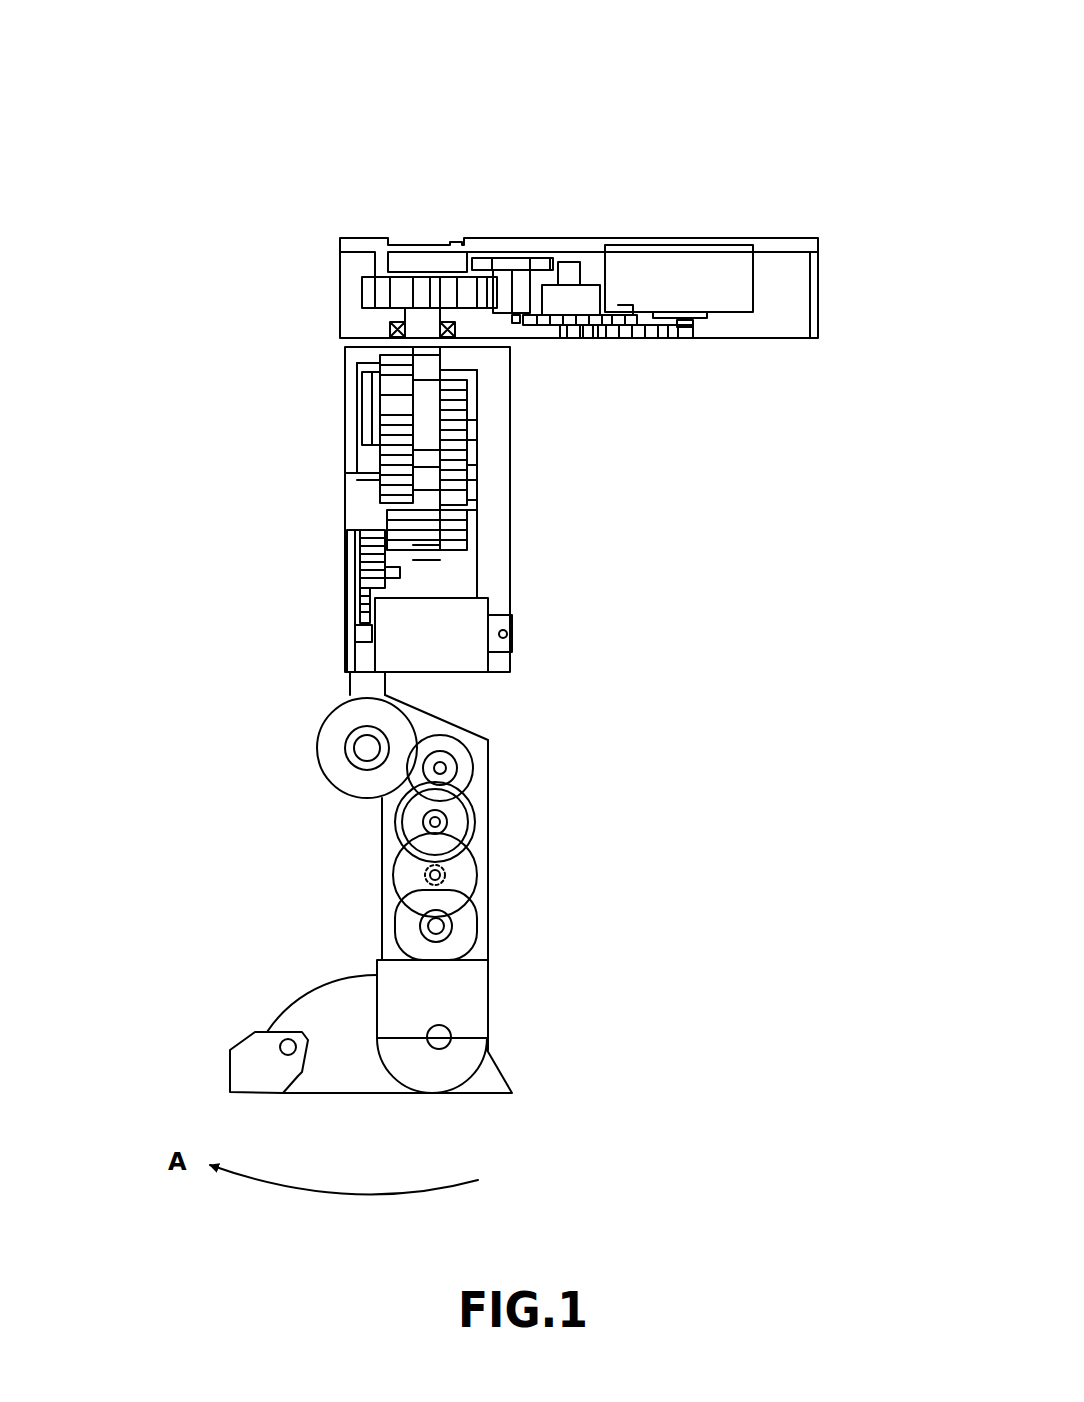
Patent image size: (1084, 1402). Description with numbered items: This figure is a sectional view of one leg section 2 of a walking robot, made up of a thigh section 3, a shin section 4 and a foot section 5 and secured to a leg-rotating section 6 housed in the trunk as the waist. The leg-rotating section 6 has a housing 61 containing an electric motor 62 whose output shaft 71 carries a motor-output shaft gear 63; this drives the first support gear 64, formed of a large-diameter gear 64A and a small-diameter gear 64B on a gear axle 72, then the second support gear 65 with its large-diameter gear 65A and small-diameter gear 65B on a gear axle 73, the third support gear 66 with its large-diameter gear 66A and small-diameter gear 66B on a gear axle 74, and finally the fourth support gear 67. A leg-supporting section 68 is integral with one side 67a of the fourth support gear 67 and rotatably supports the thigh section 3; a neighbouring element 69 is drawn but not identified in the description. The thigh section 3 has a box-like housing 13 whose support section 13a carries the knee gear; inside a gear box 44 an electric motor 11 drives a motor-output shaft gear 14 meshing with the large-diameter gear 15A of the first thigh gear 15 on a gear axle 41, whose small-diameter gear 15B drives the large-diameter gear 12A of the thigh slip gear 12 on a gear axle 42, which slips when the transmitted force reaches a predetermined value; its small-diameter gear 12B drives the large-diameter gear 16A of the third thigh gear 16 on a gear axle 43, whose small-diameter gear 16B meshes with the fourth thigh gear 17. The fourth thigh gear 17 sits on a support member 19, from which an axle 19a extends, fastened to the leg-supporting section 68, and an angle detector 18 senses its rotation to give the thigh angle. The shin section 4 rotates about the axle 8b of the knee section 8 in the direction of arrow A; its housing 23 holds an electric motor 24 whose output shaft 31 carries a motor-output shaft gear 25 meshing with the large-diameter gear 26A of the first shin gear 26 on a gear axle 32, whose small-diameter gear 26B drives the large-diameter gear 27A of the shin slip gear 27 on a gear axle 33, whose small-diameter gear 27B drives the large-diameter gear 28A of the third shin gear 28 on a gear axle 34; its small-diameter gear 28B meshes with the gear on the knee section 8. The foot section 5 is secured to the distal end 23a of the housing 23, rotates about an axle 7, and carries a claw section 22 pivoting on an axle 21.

The leg section 2 is at (516, 755).
The thigh section 3 is at (516, 524).
The shin section 4 is at (425, 918).
The foot section 5 is at (312, 1005).
The leg-rotating section 6 is at (565, 255).
The axle 7 is at (439, 1049).
The knee section 8 is at (330, 742).
The axle 8b is at (358, 762).
The electric motor 11 is at (505, 670).
The thigh slip gear 12 is at (562, 598).
The large-diameter gear 12A is at (413, 563).
The small-diameter gear 12B is at (413, 548).
The housing 13 is at (450, 655).
The support section 13a is at (355, 690).
The motor-output shaft gear 14 is at (358, 645).
The first thigh gear 15 is at (252, 601).
The large-diameter gear 15A is at (352, 640).
The small-diameter gear 15B is at (352, 598).
The third thigh gear 16 is at (597, 492).
The large-diameter gear 16A is at (470, 495).
The small-diameter gear 16B is at (470, 520).
The fourth thigh gear 17 is at (395, 375).
The angle detector 18 is at (365, 405).
The support member 19 is at (428, 405).
The axle 19a is at (465, 418).
The axle 21 is at (288, 1055).
The claw section 22 is at (248, 1055).
The housing 23 is at (430, 715).
The distal end 23a is at (482, 1030).
The electric motor 24 is at (480, 972).
The motor-output shaft gear 25 is at (470, 930).
The first shin gear 26 is at (547, 883).
The large-diameter gear 26A is at (470, 890).
The small-diameter gear 26B is at (460, 872).
The shin slip gear 27 is at (548, 822).
The large-diameter gear 27A is at (462, 826).
The small-diameter gear 27B is at (470, 815).
The third shin gear 28 is at (554, 751).
The large-diameter gear 28A is at (455, 768).
The small-diameter gear 28B is at (460, 757).
The output shaft 31 is at (425, 928).
The gear axle 32 is at (430, 877).
The gear axle 33 is at (423, 824).
The gear axle 34 is at (448, 770).
The gear axle 41 is at (382, 575).
The gear axle 42 is at (368, 528).
The gear axle 43 is at (470, 470).
The gear box 44 is at (477, 445).
The housing 61 is at (805, 340).
The electric motor 62 is at (712, 255).
The motor-output shaft gear 63 is at (690, 330).
The first support gear 64 is at (670, 403).
The large-diameter gear 64A is at (660, 338).
The small-diameter gear 64B is at (620, 327).
The second support gear 65 is at (645, 162).
The large-diameter gear 65A is at (565, 290).
The small-diameter gear 65B is at (592, 290).
The third support gear 66 is at (506, 185).
The large-diameter gear 66A is at (516, 290).
The small-diameter gear 66B is at (497, 300).
The fourth support gear 67 is at (425, 292).
The one side 67a is at (393, 324).
The leg-supporting section 68 is at (420, 327).
The bearing 69 is at (388, 333).
The output shaft 71 is at (700, 316).
The gear axle 72 is at (600, 340).
The gear axle 73 is at (583, 340).
The gear axle 74 is at (545, 338).